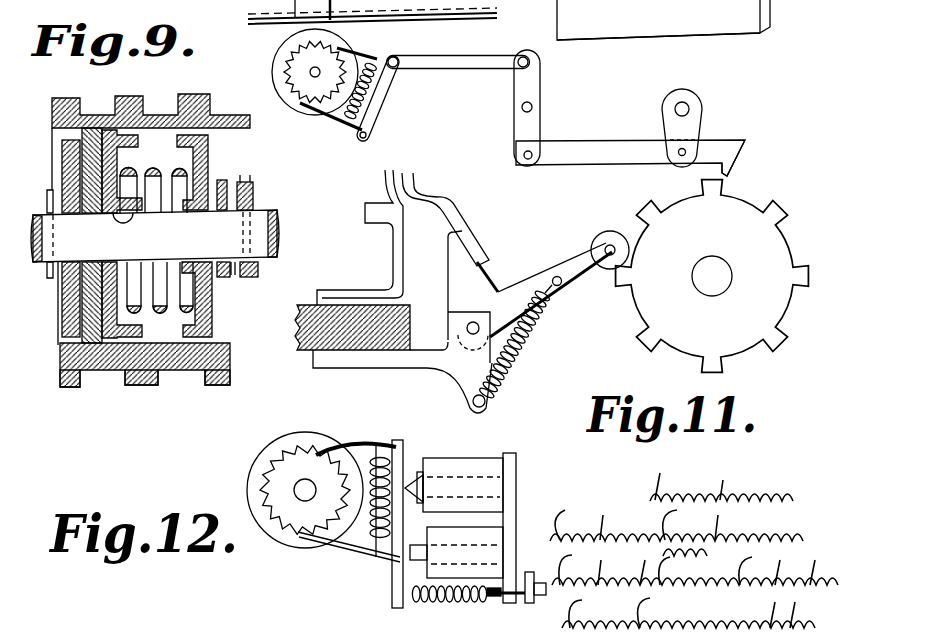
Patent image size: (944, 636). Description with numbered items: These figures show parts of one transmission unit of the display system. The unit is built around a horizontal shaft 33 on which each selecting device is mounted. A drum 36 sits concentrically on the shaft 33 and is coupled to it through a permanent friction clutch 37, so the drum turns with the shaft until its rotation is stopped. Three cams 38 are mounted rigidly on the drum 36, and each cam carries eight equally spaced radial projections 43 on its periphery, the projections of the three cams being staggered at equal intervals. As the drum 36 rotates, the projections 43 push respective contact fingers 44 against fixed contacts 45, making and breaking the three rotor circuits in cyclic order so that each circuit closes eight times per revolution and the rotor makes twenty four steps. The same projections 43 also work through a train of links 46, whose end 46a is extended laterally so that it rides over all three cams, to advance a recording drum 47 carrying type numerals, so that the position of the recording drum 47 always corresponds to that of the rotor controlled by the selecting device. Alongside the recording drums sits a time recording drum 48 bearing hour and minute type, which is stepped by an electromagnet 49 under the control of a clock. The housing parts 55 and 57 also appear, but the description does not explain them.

In FIG. 9, the horizontal shaft 33 is at (268, 212).
In FIG. 11, the horizontal shaft 33 is at (710, 271).
In FIG. 9, the drum 36 is at (107, 355).
In FIG. 11, the drum 36 is at (747, 317).
In FIG. 9, the permanent friction clutch 37 is at (70, 337).
In FIG. 9, the cams 38 is at (62, 383).
In FIG. 9, the radial projections 43 is at (61, 104).
In FIG. 11, the radial projections 43 is at (609, 289).
In FIG. 11, the contact fingers 44 is at (475, 292).
In FIG. 11, the fixed contacts 45 is at (387, 172).
In FIG. 11, the train of links 46 is at (628, 127).
In FIG. 11, the end of the train of links 46a is at (734, 169).
In FIG. 11, the recording drum 47 is at (273, 66).
In FIG. 12, the time recording drum 48 is at (297, 442).
In FIG. 12, the electromagnet 49 is at (443, 473).
In FIG. 11, the housing 55 is at (658, 20).
In FIG. 11, the housing part 57 is at (663, 20).